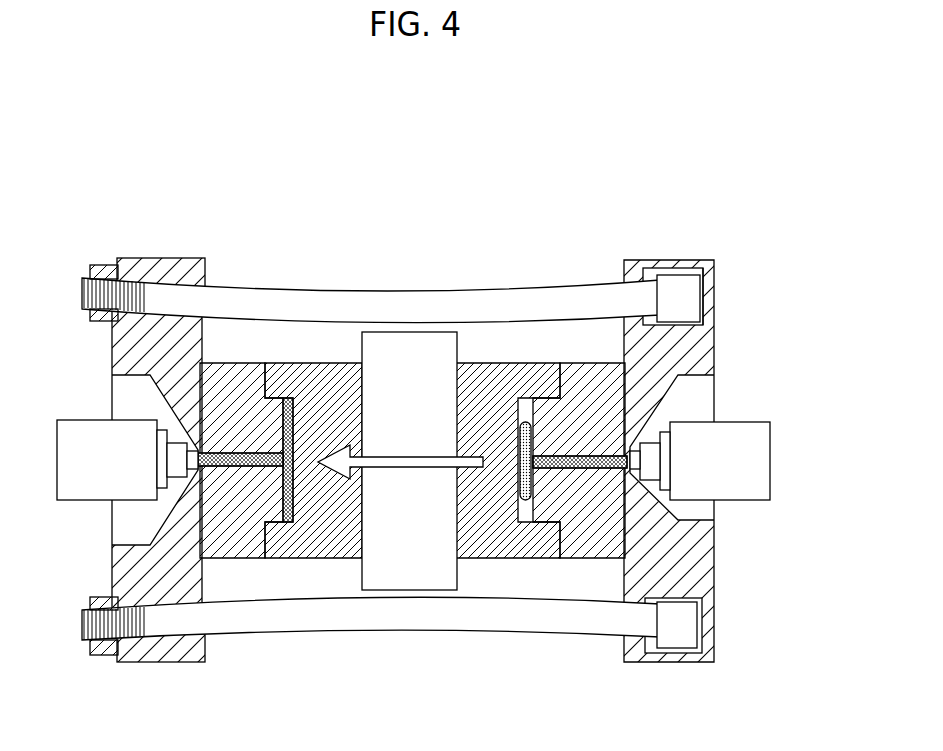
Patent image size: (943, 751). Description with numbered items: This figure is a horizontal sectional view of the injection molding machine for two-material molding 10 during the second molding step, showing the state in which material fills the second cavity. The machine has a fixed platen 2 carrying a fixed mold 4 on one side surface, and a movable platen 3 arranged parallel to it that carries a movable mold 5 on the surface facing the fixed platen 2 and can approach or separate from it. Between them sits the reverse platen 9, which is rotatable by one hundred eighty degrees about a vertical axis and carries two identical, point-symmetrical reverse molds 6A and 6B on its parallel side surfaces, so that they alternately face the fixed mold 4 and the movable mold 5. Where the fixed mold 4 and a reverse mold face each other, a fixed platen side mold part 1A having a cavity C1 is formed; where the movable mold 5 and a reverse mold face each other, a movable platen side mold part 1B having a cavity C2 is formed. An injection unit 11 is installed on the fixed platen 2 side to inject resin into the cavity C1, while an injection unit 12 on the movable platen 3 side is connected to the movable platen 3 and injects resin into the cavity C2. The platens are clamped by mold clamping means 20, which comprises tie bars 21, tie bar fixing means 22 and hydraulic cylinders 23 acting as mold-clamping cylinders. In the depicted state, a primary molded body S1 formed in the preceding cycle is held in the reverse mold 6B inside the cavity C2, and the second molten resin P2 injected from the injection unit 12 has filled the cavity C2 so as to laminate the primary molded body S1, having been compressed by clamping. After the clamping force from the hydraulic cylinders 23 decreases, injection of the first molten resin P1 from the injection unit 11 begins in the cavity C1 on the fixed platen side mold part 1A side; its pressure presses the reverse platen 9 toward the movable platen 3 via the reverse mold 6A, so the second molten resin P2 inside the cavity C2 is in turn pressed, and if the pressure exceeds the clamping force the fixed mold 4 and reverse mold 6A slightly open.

The injection molding machine for two-material molding 10 is at (434, 460).
The fixed platen 2 is at (669, 260).
The movable platen 3 is at (157, 258).
The fixed mold 4 is at (595, 363).
The movable mold 5 is at (230, 363).
The fixed platen side mold part 1A is at (558, 352).
The movable platen side mold part 1B is at (290, 352).
The reverse mold 6A is at (514, 381).
The reverse mold 6B is at (313, 381).
The reverse platen 9 is at (407, 332).
The injection unit 11 is at (740, 422).
The injection unit 12 is at (83, 420).
The mold clamping means 20 is at (712, 272).
The tie bars 21 is at (254, 283).
The tie bar fixing means 22 is at (100, 265).
The hydraulic cylinders 23 is at (700, 290).
The first molten resin P1 is at (515, 475).
The second molten resin P2 is at (268, 490).
The cavity C1 is at (523, 522).
The cavity C2 is at (288, 522).
The primary molded body S1 is at (400, 462).